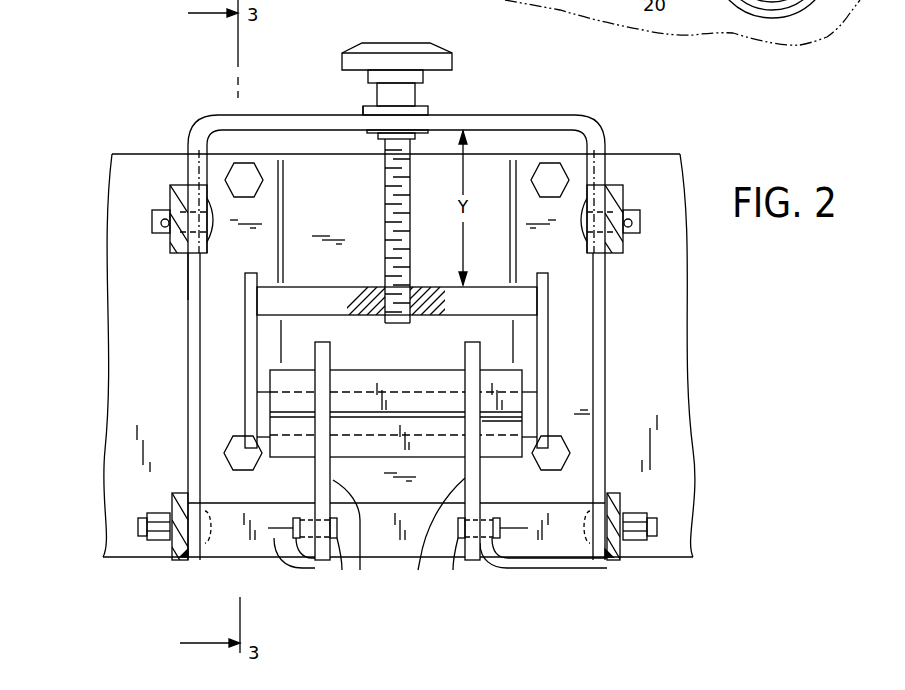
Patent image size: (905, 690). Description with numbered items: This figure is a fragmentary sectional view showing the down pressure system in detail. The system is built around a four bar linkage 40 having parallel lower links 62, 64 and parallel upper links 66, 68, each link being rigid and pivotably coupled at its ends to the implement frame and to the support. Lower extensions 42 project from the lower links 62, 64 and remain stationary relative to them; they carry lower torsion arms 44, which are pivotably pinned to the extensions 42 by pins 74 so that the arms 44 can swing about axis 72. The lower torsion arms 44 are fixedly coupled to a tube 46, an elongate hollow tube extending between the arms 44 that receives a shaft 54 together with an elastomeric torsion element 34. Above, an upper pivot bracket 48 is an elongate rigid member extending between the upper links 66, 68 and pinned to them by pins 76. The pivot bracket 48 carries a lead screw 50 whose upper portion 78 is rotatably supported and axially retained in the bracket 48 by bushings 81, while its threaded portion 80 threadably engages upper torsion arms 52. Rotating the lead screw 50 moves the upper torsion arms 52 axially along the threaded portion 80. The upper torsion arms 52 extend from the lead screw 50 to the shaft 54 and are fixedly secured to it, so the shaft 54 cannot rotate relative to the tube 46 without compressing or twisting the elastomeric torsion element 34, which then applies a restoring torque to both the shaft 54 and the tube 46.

The elastomeric torsion element 34 is at (321, 424).
The four bar linkage 40 is at (172, 172).
The lower extensions 42 is at (284, 566).
The lower torsion arms 44 is at (348, 533).
The tube 46 is at (398, 370).
The upper pivot bracket 48 is at (498, 127).
The lead screw 50 is at (442, 62).
The upper torsion arms 52 is at (302, 300).
The shaft 54 is at (265, 425).
The lower link 62 is at (178, 562).
The lower link 64 is at (613, 563).
The upper link 66 is at (171, 202).
The upper link 68 is at (621, 186).
The axis 72 is at (283, 528).
The pins 74 is at (330, 528).
The pins 76 is at (636, 212).
The upper portion 78 is at (432, 113).
The threaded portion 80 is at (386, 230).
The bushings 81 is at (367, 110).